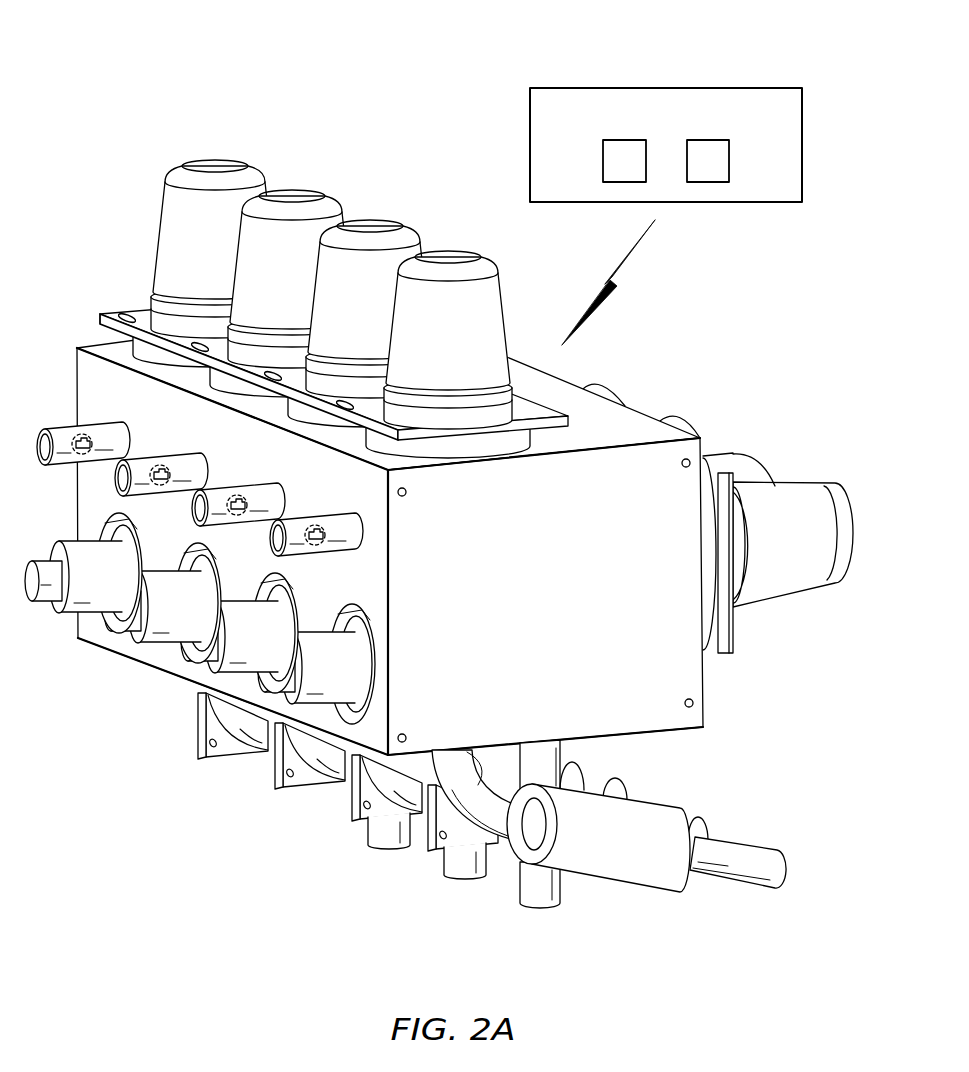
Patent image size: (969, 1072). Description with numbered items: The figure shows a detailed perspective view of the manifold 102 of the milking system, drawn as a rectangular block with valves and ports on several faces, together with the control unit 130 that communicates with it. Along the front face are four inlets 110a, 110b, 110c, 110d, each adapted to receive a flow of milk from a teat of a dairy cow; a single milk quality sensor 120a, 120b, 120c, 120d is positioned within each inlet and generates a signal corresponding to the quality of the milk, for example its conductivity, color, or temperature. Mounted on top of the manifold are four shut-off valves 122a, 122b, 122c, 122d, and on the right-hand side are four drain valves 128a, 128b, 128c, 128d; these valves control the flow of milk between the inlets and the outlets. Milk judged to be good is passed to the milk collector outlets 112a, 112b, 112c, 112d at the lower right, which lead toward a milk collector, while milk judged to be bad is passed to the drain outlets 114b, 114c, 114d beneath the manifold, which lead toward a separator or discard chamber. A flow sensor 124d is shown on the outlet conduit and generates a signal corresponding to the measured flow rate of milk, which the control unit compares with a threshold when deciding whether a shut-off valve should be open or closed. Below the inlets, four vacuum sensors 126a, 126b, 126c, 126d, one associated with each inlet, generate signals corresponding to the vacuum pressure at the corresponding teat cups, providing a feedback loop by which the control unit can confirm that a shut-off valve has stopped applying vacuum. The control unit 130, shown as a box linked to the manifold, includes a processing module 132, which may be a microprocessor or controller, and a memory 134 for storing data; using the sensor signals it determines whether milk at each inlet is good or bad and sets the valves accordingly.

The manifold 102 is at (109, 81).
The inlet 110a is at (55, 430).
The inlet 110b is at (170, 458).
The inlet 110c is at (248, 487).
The inlet 110d is at (325, 518).
The milk collector outlet 112a is at (584, 768).
The milk collector outlet 112b is at (640, 795).
The milk collector outlet 112c is at (710, 825).
The milk collector outlet 112d is at (787, 860).
The drain outlet 114b is at (392, 848).
The drain outlet 114c is at (468, 880).
The drain outlet 114d is at (545, 908).
The milk quality sensor 120a is at (93, 434).
The milk quality sensor 120b is at (158, 487).
The milk quality sensor 120c is at (236, 517).
The milk quality sensor 120d is at (355, 530).
The shut-off valve 122a is at (217, 158).
The shut-off valve 122b is at (294, 189).
The shut-off valve 122c is at (373, 220).
The shut-off valve 122d is at (449, 251).
The flow sensor 124d is at (607, 840).
The vacuum sensor 126a is at (41, 561).
The vacuum sensor 126b is at (101, 631).
The vacuum sensor 126c is at (179, 661).
The vacuum sensor 126d is at (260, 694).
The drain valve 128a is at (598, 388).
The drain valve 128b is at (675, 420).
The drain valve 128c is at (742, 452).
The drain valve 128d is at (818, 482).
The control unit 130 is at (666, 113).
The processing module 132 is at (602, 160).
The memory 134 is at (730, 160).